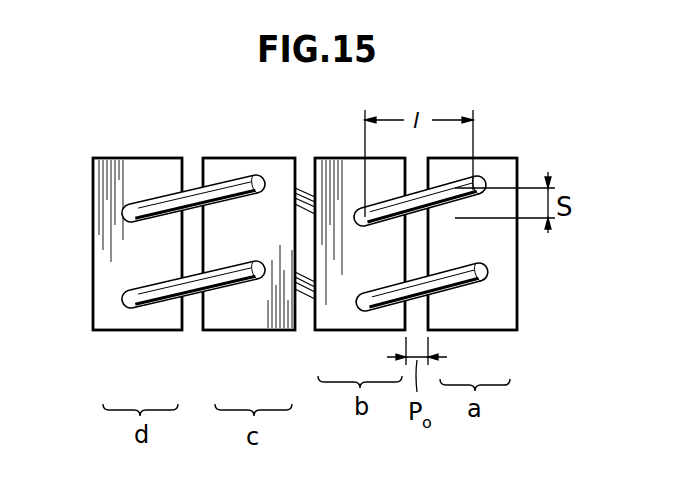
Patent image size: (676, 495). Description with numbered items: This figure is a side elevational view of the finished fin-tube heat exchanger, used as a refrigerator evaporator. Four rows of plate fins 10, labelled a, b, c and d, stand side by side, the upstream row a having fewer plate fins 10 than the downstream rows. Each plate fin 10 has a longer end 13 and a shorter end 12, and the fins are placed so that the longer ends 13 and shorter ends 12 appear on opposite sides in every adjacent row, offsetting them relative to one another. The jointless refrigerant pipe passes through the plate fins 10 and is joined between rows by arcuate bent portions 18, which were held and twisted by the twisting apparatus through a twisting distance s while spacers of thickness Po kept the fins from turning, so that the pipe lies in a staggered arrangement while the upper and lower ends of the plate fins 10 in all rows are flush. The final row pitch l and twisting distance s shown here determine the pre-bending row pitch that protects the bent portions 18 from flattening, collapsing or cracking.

The plate fin 10 is at (498, 308).
The shorter end 12 is at (137, 158).
The longer end 13 is at (245, 158).
The bent portion 18 is at (196, 308).